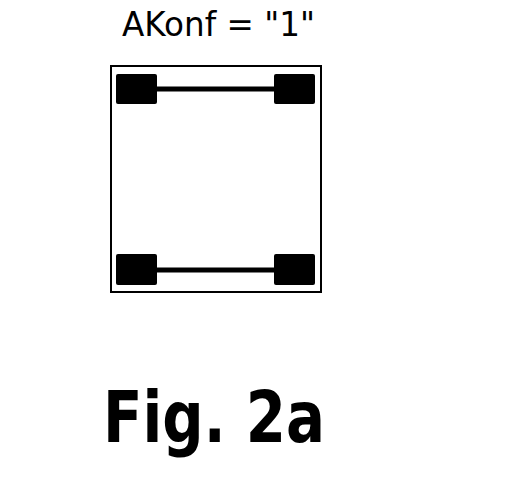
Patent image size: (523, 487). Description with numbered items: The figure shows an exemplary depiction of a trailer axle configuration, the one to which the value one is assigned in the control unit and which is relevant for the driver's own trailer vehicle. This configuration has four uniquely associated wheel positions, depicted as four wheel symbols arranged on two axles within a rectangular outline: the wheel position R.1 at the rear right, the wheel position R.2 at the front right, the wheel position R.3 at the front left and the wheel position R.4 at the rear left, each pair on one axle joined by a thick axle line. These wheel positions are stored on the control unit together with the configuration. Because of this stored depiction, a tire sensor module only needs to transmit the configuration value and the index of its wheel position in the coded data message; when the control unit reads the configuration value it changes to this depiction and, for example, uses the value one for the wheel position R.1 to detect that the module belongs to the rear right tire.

The wheel position R.1 is at (315, 270).
The wheel position R.2 is at (315, 89).
The wheel position R.3 is at (116, 89).
The wheel position R.4 is at (116, 270).